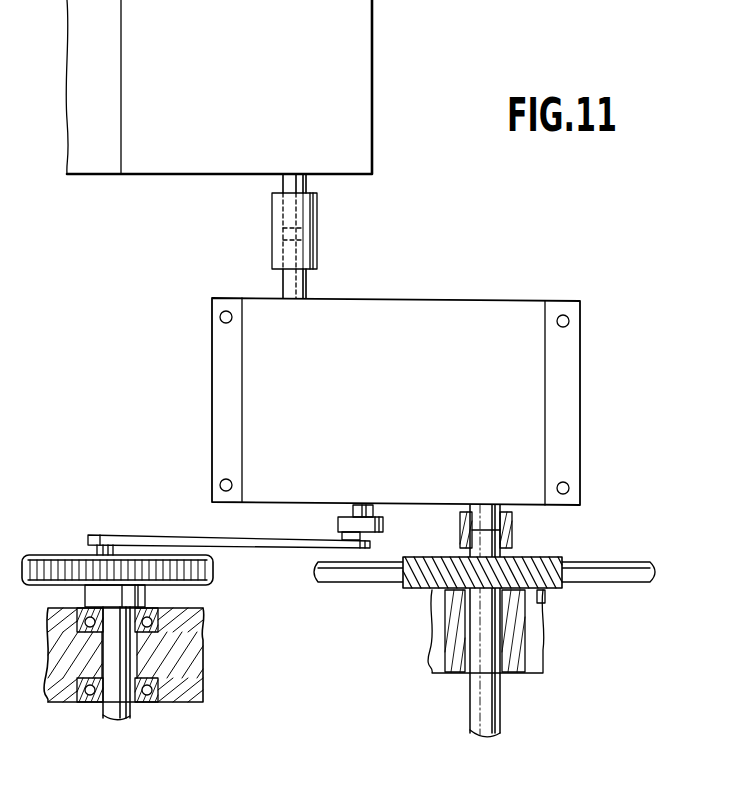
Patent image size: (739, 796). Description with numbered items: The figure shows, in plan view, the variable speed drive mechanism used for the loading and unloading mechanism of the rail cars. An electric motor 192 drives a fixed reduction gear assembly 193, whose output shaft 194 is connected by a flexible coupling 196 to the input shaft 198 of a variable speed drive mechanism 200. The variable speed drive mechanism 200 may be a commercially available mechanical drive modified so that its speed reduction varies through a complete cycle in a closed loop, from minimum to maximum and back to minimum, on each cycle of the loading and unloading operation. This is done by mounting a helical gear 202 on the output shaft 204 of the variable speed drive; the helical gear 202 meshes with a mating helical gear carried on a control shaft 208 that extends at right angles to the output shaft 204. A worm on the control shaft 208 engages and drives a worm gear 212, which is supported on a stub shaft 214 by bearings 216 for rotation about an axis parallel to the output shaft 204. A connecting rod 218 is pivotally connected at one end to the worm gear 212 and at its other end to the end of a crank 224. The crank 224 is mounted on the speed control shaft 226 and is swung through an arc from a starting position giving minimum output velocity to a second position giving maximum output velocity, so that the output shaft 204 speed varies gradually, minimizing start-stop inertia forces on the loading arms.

The electric motor 192 is at (105, 165).
The fixed reduction gear assembly 193 is at (365, 97).
The output shaft 194 is at (307, 180).
The flexible coupling 196 is at (317, 218).
The input shaft 198 is at (307, 280).
The variable speed drive mechanism 200 is at (583, 335).
The helical gear 202 is at (537, 557).
The output shaft 204 is at (500, 692).
The control shaft 208 is at (612, 577).
The worm gear 212 is at (53, 555).
The stub shaft 214 is at (136, 705).
The bearings 216 is at (172, 650).
The connecting rod 218 is at (275, 548).
The crank 224 is at (338, 519).
The speed control shaft 226 is at (385, 513).